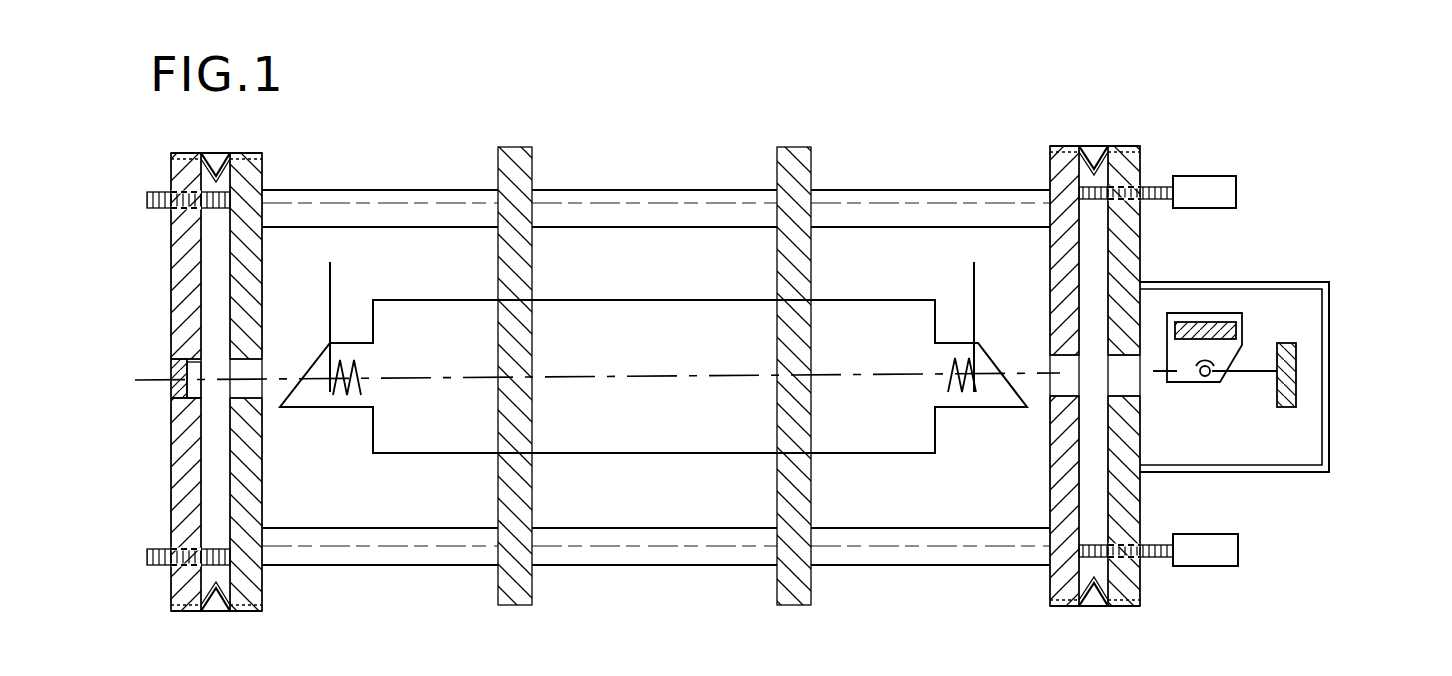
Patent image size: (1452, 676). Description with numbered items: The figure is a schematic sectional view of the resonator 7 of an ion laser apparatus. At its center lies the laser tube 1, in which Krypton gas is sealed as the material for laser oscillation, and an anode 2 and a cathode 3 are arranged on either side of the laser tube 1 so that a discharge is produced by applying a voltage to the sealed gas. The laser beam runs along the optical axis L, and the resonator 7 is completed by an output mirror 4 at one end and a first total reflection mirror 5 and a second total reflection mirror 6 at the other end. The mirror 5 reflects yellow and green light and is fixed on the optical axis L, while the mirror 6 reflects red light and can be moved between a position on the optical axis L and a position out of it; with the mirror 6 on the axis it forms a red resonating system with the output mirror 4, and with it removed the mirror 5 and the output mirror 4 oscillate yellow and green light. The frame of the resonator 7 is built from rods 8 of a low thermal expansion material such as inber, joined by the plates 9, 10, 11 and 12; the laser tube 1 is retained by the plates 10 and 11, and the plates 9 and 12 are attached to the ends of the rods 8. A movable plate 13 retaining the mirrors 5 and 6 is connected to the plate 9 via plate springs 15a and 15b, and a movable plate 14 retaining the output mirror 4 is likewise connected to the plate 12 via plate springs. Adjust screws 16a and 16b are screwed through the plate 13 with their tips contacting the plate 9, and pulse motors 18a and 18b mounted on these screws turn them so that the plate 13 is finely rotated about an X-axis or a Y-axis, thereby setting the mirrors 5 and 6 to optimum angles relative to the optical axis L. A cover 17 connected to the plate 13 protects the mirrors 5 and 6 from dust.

The laser tube 1 is at (640, 300).
The anode 2 is at (330, 295).
The cathode 3 is at (975, 285).
The output mirror 4 is at (178, 350).
The first total reflection mirror 5 is at (1288, 344).
The second total reflection mirror 6 is at (1205, 322).
The resonator 7 is at (762, 115).
The rods 8 is at (890, 190).
The plate 9 is at (1060, 585).
The plate 10 is at (800, 595).
The plate 11 is at (520, 594).
The plate 12 is at (253, 595).
The movable plate 13 is at (1130, 165).
The movable plate 14 is at (183, 588).
The plate spring 15a is at (1094, 166).
The plate spring 15b is at (1100, 586).
The adjust screw 16a is at (1160, 190).
The adjust screw 16b is at (1160, 553).
The cover 17 is at (1235, 470).
The motor 18a is at (1237, 193).
The motor 18b is at (1240, 553).
The optical axis L is at (162, 380).